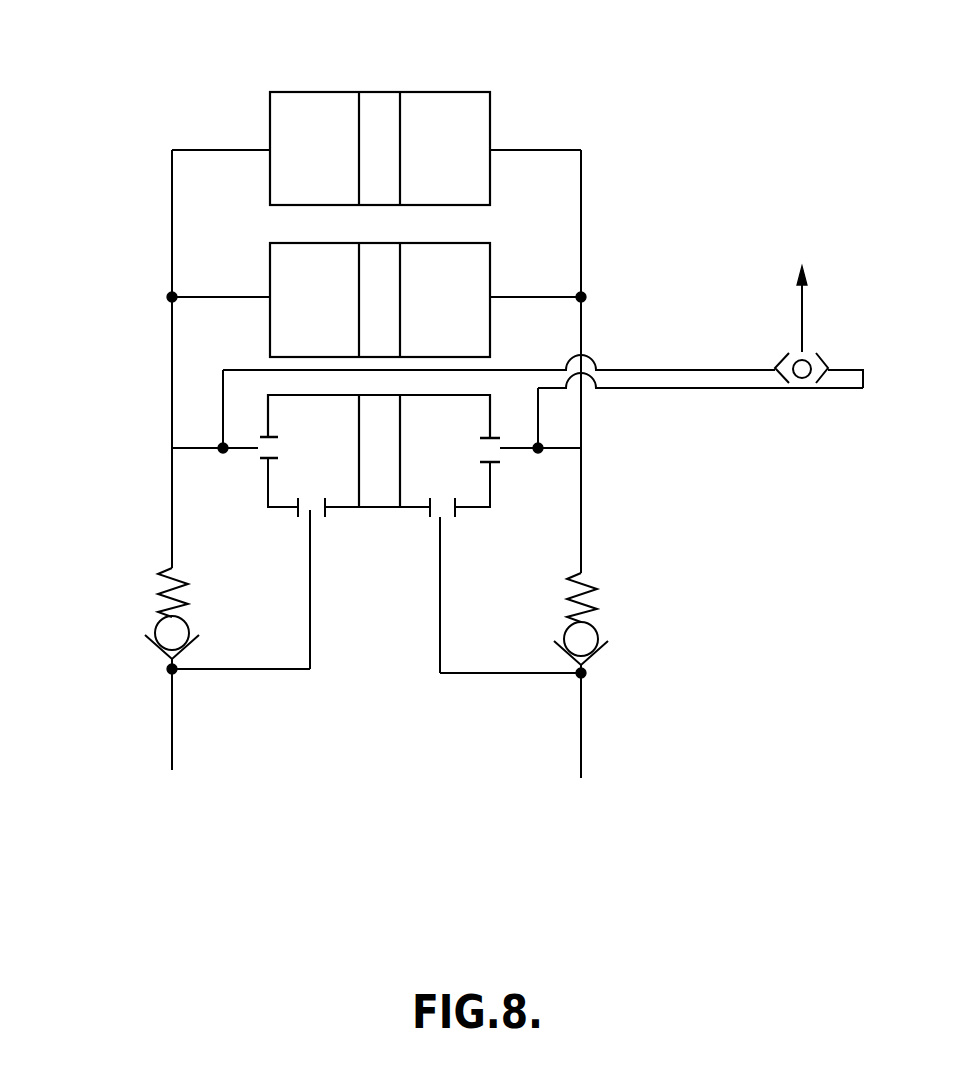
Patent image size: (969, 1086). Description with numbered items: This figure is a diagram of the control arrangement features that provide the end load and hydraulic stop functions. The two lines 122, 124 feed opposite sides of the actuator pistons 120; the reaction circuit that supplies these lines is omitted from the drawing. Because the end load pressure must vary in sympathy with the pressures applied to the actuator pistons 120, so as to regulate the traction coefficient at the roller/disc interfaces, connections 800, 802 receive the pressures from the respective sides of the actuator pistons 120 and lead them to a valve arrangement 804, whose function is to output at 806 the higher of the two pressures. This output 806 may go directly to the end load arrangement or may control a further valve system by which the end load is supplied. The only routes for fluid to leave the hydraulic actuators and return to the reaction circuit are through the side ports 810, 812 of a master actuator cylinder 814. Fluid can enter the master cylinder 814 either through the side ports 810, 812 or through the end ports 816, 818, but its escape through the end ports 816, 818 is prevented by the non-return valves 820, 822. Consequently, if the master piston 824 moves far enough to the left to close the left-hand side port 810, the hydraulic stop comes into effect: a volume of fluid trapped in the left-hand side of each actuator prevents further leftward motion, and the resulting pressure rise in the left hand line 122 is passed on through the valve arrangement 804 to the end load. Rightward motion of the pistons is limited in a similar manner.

The actuator pistons 120 is at (375, 95).
The left hand line 122 is at (168, 746).
The line 124 is at (585, 748).
The connection 800 is at (688, 367).
The connection 802 is at (627, 388).
The valve arrangement 804 is at (822, 360).
The output 806 is at (796, 288).
The left-hand side port 810 is at (308, 510).
The side port 812 is at (445, 508).
The master actuator cylinder 814 is at (490, 488).
The end port 816 is at (258, 452).
The end port 818 is at (497, 453).
The non-return valve 820 is at (148, 645).
The non-return valve 822 is at (603, 653).
The master piston 824 is at (375, 482).